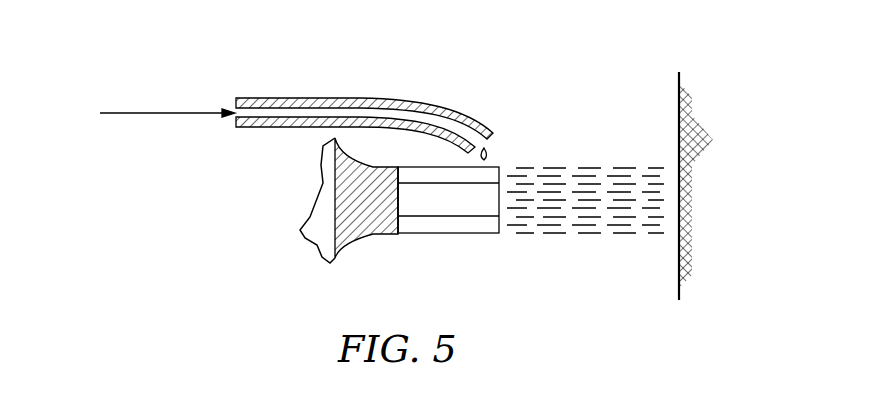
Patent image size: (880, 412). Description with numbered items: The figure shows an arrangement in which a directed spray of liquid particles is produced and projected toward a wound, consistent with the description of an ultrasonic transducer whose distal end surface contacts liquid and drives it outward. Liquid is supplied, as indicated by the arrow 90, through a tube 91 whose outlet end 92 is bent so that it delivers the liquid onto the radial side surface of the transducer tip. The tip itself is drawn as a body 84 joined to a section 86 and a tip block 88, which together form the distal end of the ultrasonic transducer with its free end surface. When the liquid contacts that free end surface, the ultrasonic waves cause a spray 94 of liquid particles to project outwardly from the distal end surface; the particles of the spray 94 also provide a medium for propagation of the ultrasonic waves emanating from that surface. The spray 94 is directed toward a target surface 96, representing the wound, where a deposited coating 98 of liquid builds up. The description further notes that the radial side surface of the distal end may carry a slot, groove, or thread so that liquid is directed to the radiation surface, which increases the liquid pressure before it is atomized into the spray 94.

The nozzle body 84 is at (360, 223).
The nozzle insert 86 is at (412, 216).
The nozzle tip block 88 is at (458, 234).
The liquid supply arrow 90 is at (153, 112).
The liquid supply tube 91 is at (298, 115).
The tube outlet end 92 is at (447, 107).
The liquid spray 94 is at (555, 185).
The target surface 96 is at (678, 118).
The deposited coating 98 is at (710, 140).